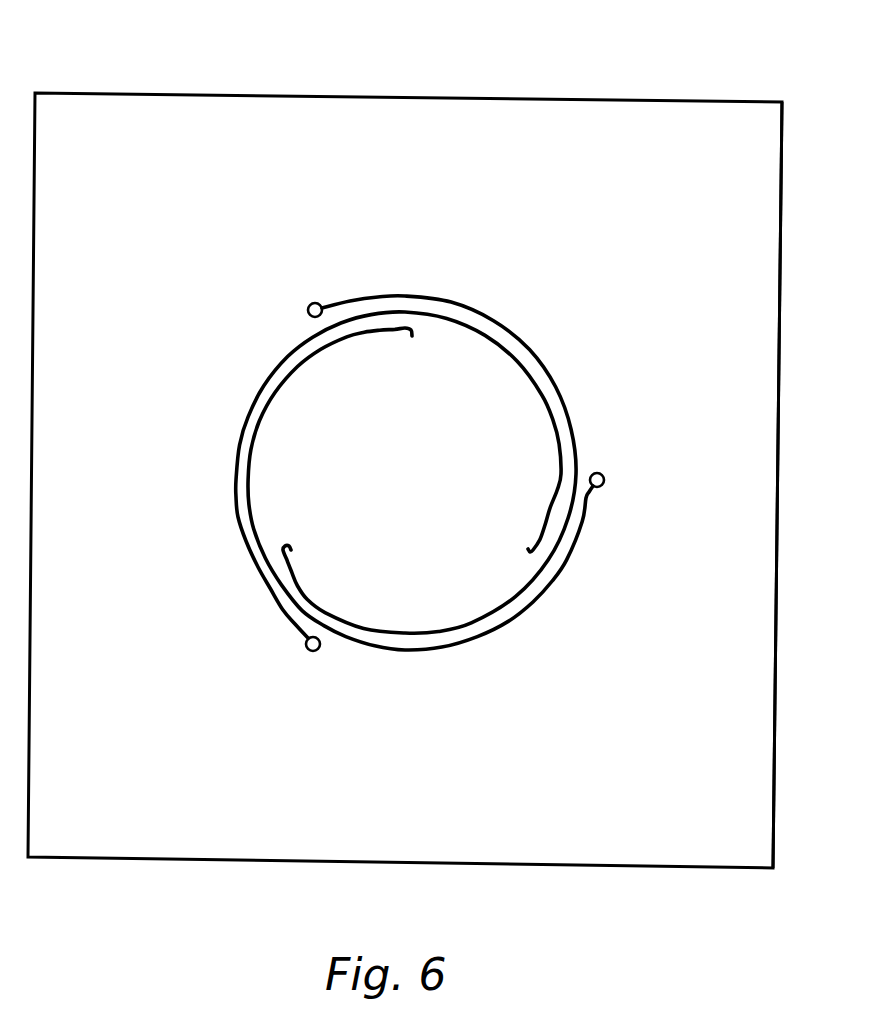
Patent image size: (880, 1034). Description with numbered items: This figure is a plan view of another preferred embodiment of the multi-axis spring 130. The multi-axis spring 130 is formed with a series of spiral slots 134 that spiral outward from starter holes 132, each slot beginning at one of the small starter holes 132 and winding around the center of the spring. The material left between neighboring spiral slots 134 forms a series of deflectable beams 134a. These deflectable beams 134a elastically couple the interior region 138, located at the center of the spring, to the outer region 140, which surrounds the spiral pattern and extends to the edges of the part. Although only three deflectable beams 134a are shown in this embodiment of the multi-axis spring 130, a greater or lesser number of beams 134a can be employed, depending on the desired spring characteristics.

The multi-axis spring 130 is at (648, 92).
The starter holes 132 is at (317, 303).
The spiral slots 134 is at (452, 438).
The deflectable beams 134a is at (547, 387).
The interior region 138 is at (479, 514).
The outer region 140 is at (740, 605).